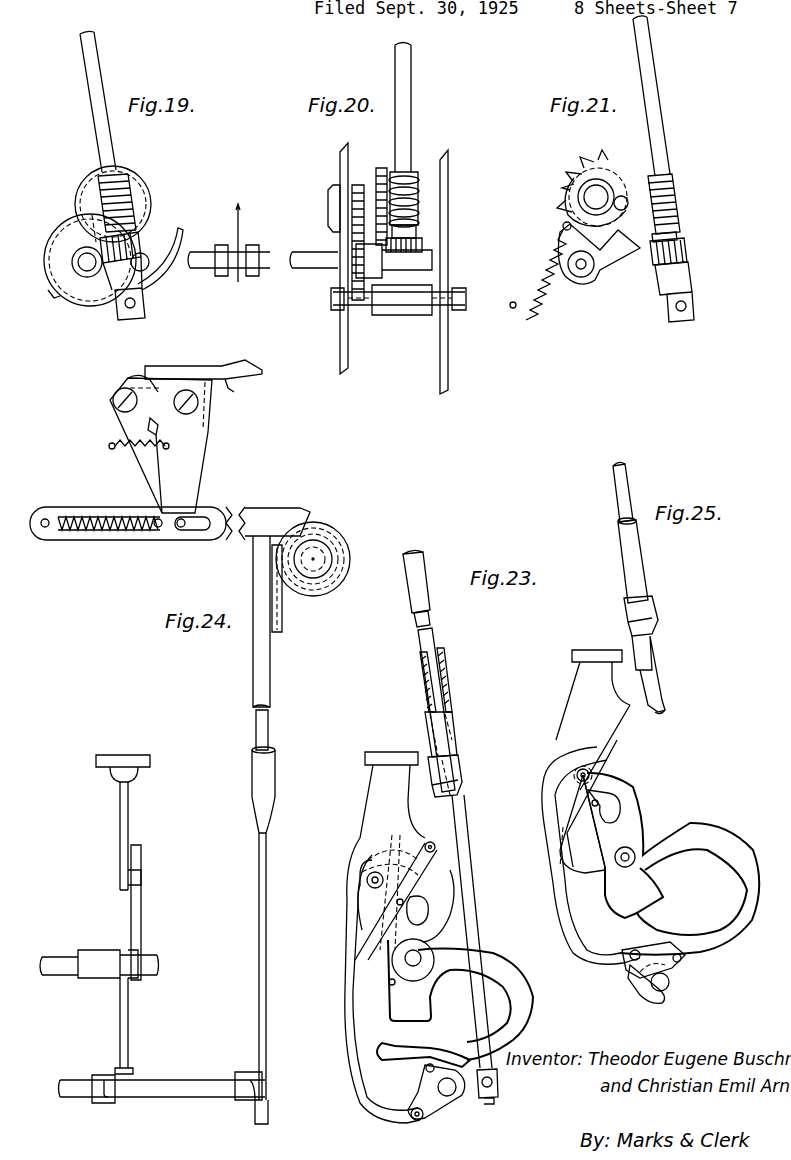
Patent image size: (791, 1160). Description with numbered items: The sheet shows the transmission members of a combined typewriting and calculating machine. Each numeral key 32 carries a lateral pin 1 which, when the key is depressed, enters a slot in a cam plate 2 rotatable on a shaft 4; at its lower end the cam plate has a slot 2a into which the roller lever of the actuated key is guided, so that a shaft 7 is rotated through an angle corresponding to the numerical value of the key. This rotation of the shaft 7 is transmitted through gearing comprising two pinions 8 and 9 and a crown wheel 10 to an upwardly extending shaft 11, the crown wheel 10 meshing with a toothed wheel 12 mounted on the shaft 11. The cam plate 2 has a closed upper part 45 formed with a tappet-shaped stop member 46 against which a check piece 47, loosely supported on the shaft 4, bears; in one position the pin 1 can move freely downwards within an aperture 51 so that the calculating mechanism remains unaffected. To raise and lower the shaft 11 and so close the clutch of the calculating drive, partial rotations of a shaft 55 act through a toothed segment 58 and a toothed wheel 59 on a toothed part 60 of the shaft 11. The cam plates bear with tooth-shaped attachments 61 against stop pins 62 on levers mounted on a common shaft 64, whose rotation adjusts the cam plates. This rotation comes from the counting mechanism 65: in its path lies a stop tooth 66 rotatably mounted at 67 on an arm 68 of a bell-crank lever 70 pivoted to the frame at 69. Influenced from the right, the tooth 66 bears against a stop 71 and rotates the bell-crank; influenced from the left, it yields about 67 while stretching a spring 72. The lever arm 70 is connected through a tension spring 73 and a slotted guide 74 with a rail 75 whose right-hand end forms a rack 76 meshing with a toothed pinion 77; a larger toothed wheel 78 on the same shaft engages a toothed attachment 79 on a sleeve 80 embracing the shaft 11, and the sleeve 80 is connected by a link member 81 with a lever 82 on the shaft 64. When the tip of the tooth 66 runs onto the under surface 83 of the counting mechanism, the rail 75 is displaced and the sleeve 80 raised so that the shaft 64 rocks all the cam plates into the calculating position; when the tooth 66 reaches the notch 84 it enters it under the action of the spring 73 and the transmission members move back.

In FIG. 23, the lateral pin 1 is at (372, 874).
In FIG. 24, the cam plate 2 is at (128, 1030).
In FIG. 23, the cam plate 2 is at (528, 1030).
In FIG. 25, the cam plate 2 is at (745, 883).
In FIG. 23, the slot 2a is at (423, 1046).
In FIG. 24, the shaft 4 is at (62, 956).
In FIG. 23, the shaft 4 is at (424, 956).
In FIG. 25, the shaft 4 is at (633, 850).
In FIG. 19, the shaft 7 is at (80, 266).
In FIG. 20, the shaft 7 is at (318, 266).
In FIG. 19, the pinion 8 is at (47, 248).
In FIG. 20, the pinion 8 is at (352, 282).
In FIG. 19, the pinion 9 is at (92, 208).
In FIG. 20, the pinion 9 is at (358, 184).
In FIG. 19, the crown wheel 10 is at (142, 199).
In FIG. 20, the crown wheel 10 is at (382, 167).
In FIG. 19, the upwardly extending shaft 11 is at (110, 156).
In FIG. 20, the upwardly extending shaft 11 is at (411, 127).
In FIG. 21, the upwardly extending shaft 11 is at (660, 122).
In FIG. 23, the upwardly extending shaft 11 is at (424, 645).
In FIG. 25, the upwardly extending shaft 11 is at (628, 503).
In FIG. 19, the toothed wheel 12 is at (140, 246).
In FIG. 20, the toothed wheel 12 is at (424, 246).
In FIG. 21, the toothed wheel 12 is at (688, 244).
In FIG. 23, the numeral key 32 is at (390, 760).
In FIG. 24, the upper part 45 is at (142, 860).
In FIG. 23, the upper part 45 is at (360, 886).
In FIG. 25, the upper part 45 is at (546, 772).
In FIG. 23, the stop member 46 is at (420, 905).
In FIG. 25, the stop member 46 is at (610, 797).
In FIG. 23, the check piece 47 is at (385, 940).
In FIG. 25, the check piece 47 is at (583, 820).
In FIG. 25, the aperture 51 is at (588, 872).
In FIG. 21, the shaft 55 is at (580, 272).
In FIG. 21, the toothed segment 58 is at (606, 255).
In FIG. 21, the toothed wheel 59 is at (637, 176).
In FIG. 19, the toothed part 60 is at (127, 186).
In FIG. 20, the toothed part 60 is at (420, 192).
In FIG. 21, the toothed part 60 is at (678, 190).
In FIG. 25, the tooth-shaped attachment 61 is at (690, 960).
In FIG. 23, the stop pin 62 is at (426, 1070).
In FIG. 24, the common shaft 64 is at (198, 1085).
In FIG. 24, the counting mechanism 65 is at (262, 372).
In FIG. 24, the stop tooth 66 is at (138, 378).
In FIG. 24, the pivot 67 is at (114, 402).
In FIG. 24, the arm 68 is at (148, 400).
In FIG. 24, the pivot 69 is at (196, 406).
In FIG. 24, the bell-crank lever 70 is at (198, 460).
In FIG. 24, the stop 71 is at (156, 440).
In FIG. 24, the spring 72 is at (132, 448).
In FIG. 24, the tension spring 73 is at (112, 532).
In FIG. 24, the slotted guide 74 is at (200, 532).
In FIG. 24, the rail 75 is at (138, 540).
In FIG. 24, the rack 76 is at (282, 510).
In FIG. 24, the toothed pinion 77 is at (330, 556).
In FIG. 24, the toothed wheel 78 is at (338, 584).
In FIG. 24, the toothed attachment 79 is at (284, 616).
In FIG. 24, the sleeve 80 is at (270, 694).
In FIG. 25, the sleeve 80 is at (641, 575).
In FIG. 24, the link member 81 is at (268, 952).
In FIG. 23, the link member 81 is at (350, 1018).
In FIG. 25, the link member 81 is at (562, 930).
In FIG. 24, the lever 82 is at (268, 1116).
In FIG. 23, the lever 82 is at (445, 1112).
In FIG. 25, the lever 82 is at (640, 985).
In FIG. 24, the under surface 83 is at (128, 388).
In FIG. 24, the notch 84 is at (234, 392).